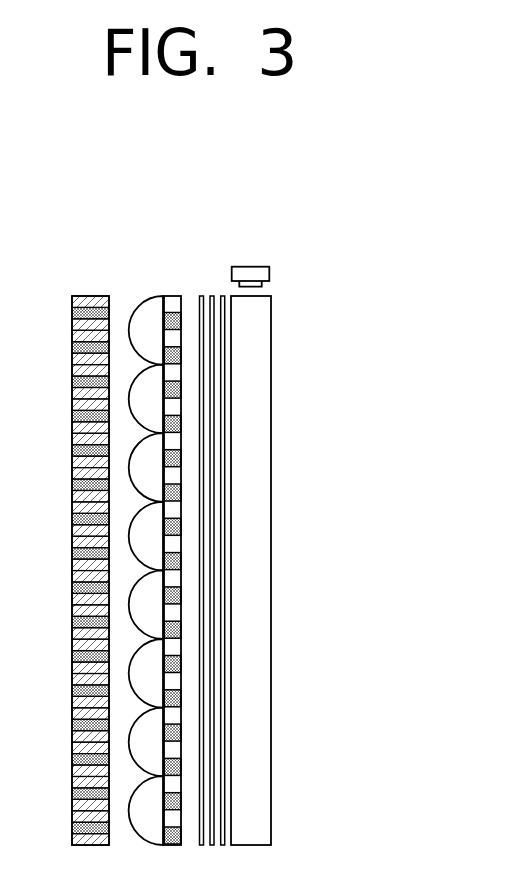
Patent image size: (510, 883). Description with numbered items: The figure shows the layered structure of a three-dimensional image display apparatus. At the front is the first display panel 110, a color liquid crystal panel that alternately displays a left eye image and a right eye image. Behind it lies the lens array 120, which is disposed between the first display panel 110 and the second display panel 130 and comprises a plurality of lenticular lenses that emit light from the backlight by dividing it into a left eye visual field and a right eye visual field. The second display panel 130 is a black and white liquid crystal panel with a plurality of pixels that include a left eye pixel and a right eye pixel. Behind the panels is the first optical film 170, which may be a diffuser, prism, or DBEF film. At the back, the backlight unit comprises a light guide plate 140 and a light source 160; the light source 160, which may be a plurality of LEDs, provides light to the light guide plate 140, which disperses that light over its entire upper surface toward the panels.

The first display panel 110 is at (88, 296).
The lens array 120 is at (142, 296).
The second display panel 130 is at (171, 296).
The light guide plate 140 is at (265, 340).
The light source 160 is at (270, 272).
The first optical film 170 is at (212, 296).